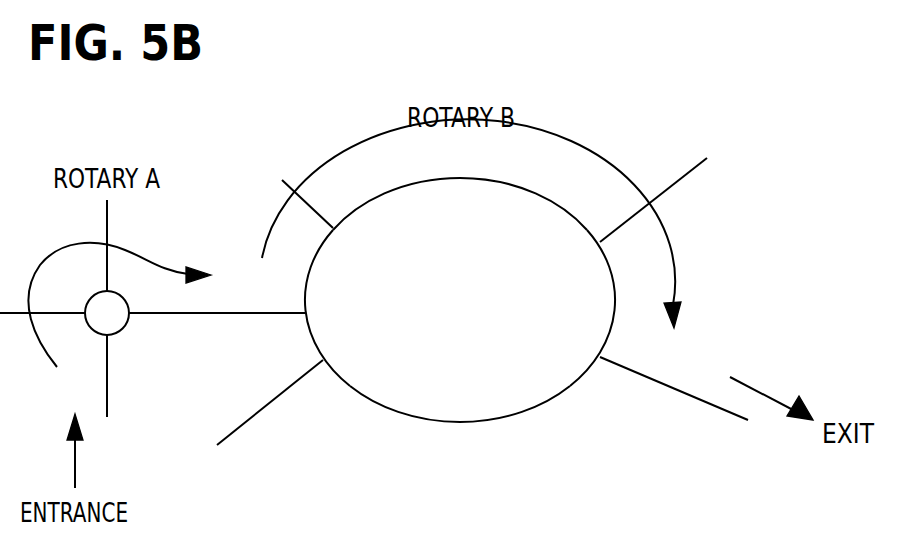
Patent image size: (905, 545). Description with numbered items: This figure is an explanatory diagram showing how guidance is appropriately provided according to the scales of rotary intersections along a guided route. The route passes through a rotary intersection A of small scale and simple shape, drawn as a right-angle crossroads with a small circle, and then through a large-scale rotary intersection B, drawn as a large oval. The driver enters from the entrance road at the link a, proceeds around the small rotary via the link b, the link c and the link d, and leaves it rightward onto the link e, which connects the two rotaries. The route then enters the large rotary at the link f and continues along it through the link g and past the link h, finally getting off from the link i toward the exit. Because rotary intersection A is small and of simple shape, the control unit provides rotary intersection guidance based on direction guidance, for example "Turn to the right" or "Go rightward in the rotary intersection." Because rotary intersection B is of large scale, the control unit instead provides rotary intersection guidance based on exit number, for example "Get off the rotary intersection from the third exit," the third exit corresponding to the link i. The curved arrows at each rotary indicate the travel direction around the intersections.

The link a is at (104, 377).
The link b is at (92, 330).
The link c is at (88, 300).
The link d is at (127, 297).
The link e is at (215, 315).
The link f is at (308, 267).
The link g is at (458, 178).
The link h is at (617, 292).
The link i is at (665, 385).